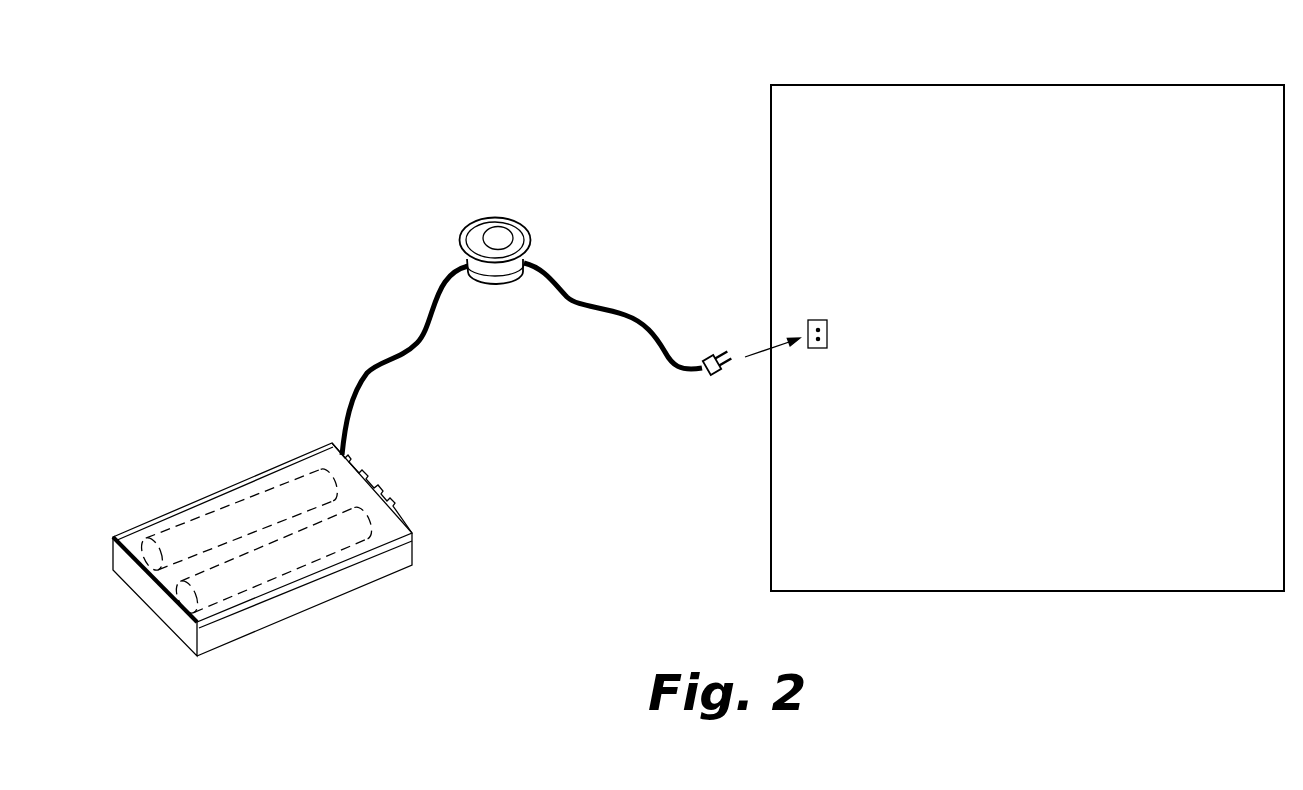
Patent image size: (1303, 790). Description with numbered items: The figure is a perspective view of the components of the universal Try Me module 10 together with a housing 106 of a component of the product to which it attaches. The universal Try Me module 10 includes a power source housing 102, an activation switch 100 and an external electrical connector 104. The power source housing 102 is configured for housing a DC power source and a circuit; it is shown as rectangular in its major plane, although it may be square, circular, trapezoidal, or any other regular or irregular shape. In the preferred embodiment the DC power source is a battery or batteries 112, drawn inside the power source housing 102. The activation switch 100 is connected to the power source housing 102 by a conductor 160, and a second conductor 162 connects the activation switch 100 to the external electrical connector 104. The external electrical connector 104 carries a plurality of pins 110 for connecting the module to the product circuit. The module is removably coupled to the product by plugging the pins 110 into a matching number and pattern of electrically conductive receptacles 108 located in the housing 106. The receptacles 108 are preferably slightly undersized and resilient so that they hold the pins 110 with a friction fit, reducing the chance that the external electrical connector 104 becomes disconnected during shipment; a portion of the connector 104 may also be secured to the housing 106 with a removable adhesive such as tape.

The universal Try Me module 10 is at (497, 120).
The activation switch 100 is at (455, 213).
The power source housing 102 is at (266, 536).
The external electrical connector 104 is at (698, 361).
The housing of a component of the product 106 is at (1062, 85).
The electrically conductive receptacles 108 is at (807, 348).
The pins 110 is at (712, 335).
The battery 112 is at (227, 523).
The conductor 160 is at (390, 362).
The second conductor 162 is at (570, 298).